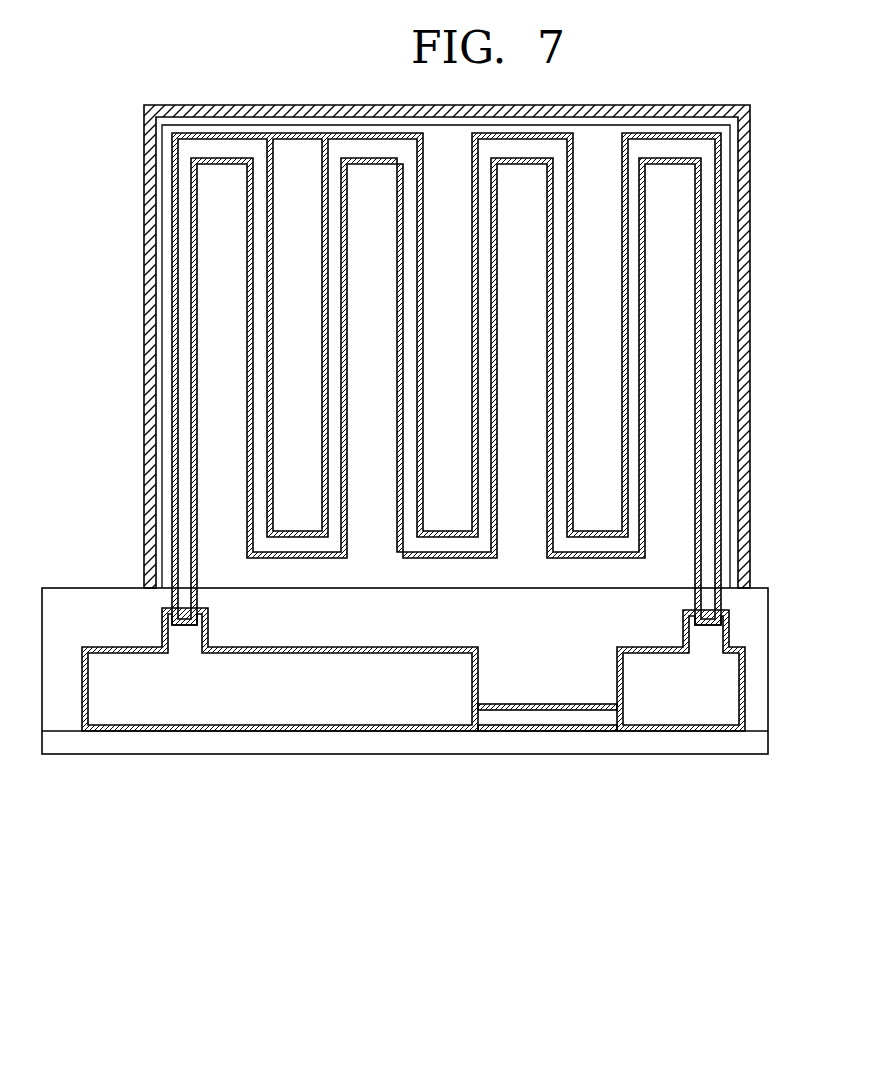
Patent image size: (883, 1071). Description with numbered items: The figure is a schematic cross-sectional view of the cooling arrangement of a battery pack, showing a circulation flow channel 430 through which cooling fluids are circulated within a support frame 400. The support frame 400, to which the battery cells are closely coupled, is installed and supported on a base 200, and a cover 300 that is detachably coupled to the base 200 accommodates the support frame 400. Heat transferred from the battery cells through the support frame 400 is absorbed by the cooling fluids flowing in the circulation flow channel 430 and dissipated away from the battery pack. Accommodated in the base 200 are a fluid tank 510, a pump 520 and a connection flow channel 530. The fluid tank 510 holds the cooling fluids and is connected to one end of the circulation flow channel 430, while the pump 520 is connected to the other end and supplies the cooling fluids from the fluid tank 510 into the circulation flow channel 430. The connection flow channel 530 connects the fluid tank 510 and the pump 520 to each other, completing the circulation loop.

The base 200 is at (760, 678).
The cover 300 is at (743, 235).
The support frame 400 is at (722, 185).
The circulation flow channel 430 is at (707, 271).
The fluid tank 510 is at (173, 710).
The pump 520 is at (688, 713).
The connection flow channel 530 is at (566, 722).